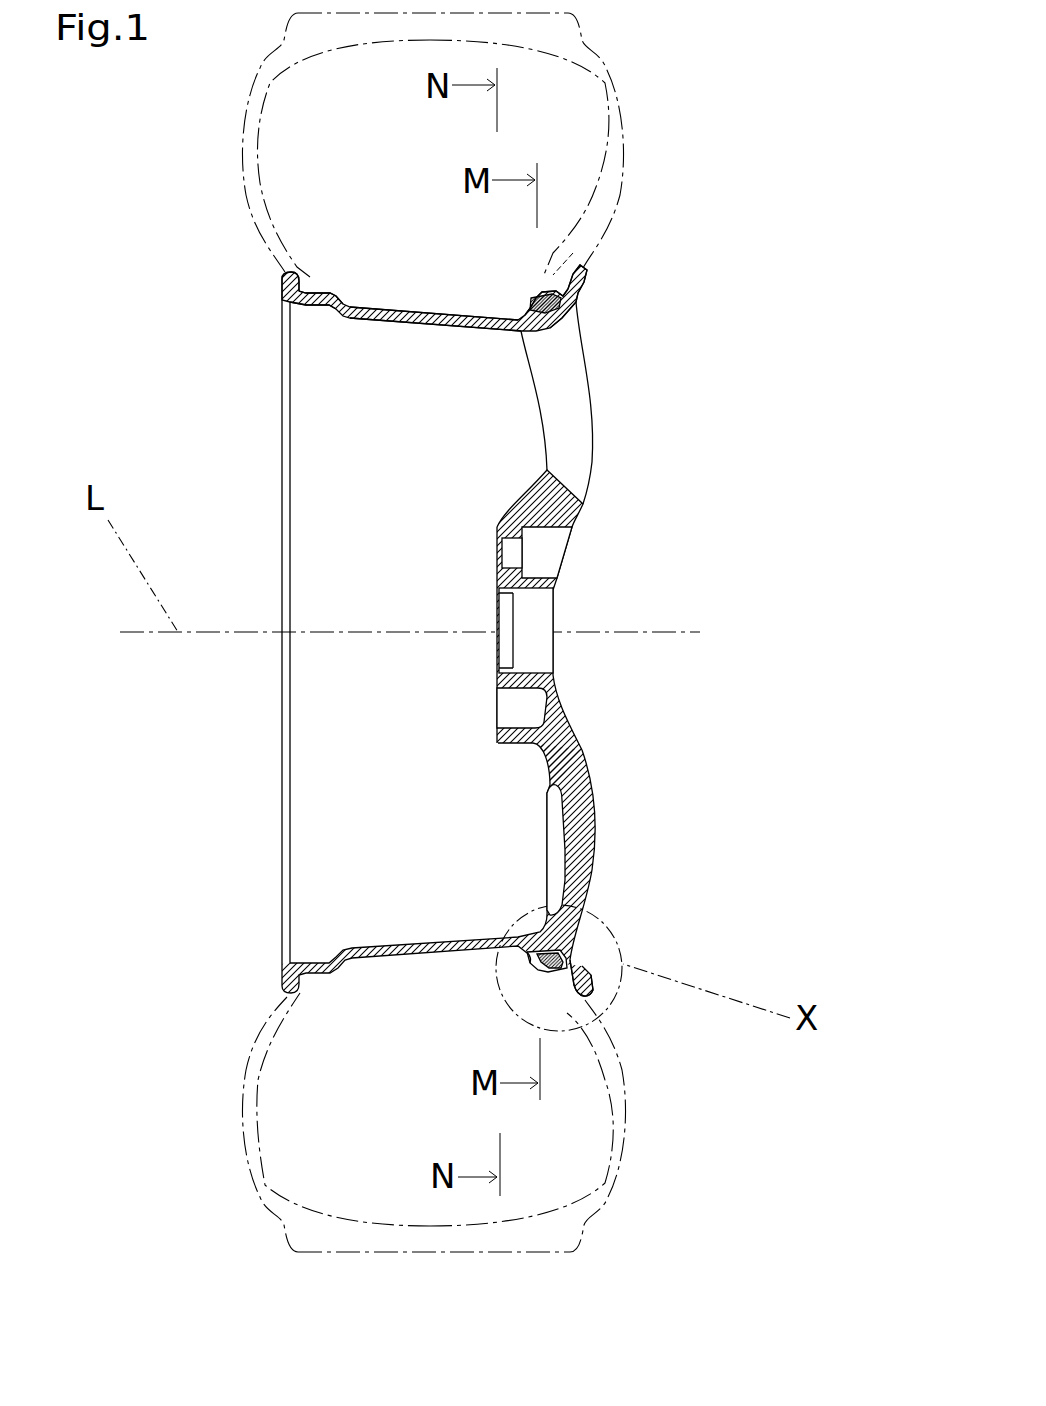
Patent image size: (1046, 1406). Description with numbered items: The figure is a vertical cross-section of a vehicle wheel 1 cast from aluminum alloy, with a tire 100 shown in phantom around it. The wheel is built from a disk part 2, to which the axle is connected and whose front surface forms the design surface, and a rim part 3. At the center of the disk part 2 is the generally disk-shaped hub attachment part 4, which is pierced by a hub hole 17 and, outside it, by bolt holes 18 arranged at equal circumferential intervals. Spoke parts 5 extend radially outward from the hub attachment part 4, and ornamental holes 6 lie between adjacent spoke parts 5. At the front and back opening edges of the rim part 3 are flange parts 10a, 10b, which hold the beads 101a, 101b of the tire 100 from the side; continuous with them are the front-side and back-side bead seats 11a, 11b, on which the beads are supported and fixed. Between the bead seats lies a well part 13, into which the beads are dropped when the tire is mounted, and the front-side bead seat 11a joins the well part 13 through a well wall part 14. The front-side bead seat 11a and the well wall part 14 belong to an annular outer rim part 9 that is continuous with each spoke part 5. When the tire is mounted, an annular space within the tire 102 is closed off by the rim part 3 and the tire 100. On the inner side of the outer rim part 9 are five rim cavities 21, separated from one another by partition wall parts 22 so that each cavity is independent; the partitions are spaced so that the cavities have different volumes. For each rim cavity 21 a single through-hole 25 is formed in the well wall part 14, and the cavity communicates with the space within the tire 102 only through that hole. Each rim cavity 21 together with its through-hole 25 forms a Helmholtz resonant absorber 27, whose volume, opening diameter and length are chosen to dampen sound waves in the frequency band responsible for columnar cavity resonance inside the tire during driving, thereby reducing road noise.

The vehicle wheel 1 is at (647, 440).
The disk part 2 is at (585, 510).
The rim part 3 is at (390, 310).
The hub attachment part 4 is at (497, 572).
The spoke part 5 is at (588, 792).
The ornamental hole 6 is at (563, 420).
The outer rim part 9 is at (546, 974).
The front-side flange part 10a is at (585, 275).
The back-side flange part 10b is at (282, 281).
The front-side bead seat 11a is at (545, 291).
The back-side bead seat 11b is at (290, 303).
The well part 13 is at (478, 322).
The well wall part 14 is at (525, 303).
The hub hole 17 is at (509, 612).
The bolt hole 18 is at (513, 551).
The rim cavity 21 is at (532, 968).
The partition wall part 22 is at (573, 303).
The through-hole 25 is at (527, 958).
The Helmholtz resonant absorber 27 is at (400, 963).
The tire 100 is at (265, 1193).
The front bead of the tire 101a is at (553, 275).
The back bead of the tire 101b is at (283, 272).
The space within the tire 102 is at (315, 1118).